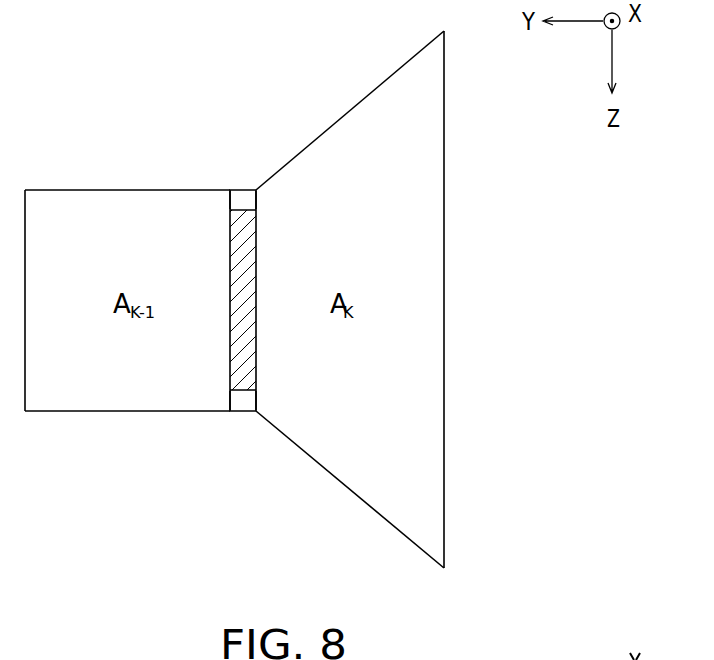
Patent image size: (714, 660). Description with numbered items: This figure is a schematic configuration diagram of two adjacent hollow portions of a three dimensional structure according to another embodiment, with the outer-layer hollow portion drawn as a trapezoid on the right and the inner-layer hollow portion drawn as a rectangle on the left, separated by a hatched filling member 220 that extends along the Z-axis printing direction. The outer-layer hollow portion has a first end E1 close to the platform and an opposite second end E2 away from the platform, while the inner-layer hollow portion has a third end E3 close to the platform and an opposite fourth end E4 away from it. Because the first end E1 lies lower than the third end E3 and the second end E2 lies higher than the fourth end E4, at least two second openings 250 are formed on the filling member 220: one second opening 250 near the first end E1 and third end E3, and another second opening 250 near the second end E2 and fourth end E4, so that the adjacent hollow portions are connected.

The filling member 220 is at (245, 315).
The second opening 250 is at (238, 204).
The first end E1 is at (351, 498).
The second end E2 is at (349, 104).
The third end E3 is at (127, 423).
The fourth end E4 is at (125, 180).